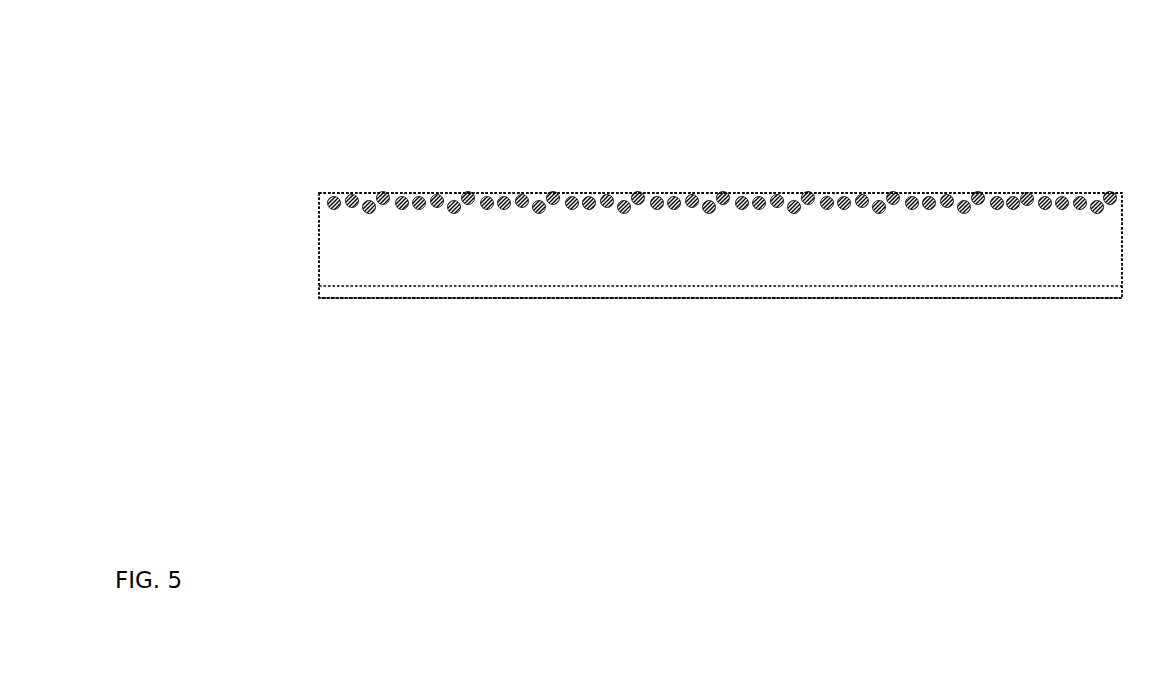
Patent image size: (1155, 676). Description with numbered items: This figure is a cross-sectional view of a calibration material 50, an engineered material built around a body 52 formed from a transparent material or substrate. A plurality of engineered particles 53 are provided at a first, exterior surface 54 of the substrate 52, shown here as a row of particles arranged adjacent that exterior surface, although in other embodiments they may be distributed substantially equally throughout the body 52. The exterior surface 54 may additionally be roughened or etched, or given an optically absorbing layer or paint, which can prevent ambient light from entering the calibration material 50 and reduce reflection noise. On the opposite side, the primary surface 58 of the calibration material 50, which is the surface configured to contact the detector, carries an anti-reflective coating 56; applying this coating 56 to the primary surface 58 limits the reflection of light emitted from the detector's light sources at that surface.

The calibration material 50 is at (284, 104).
The body 52 is at (335, 244).
The engineered particles 53 is at (573, 197).
The exterior surface 54 is at (878, 192).
The anti-reflective coating 56 is at (485, 292).
The primary surface 58 is at (947, 287).